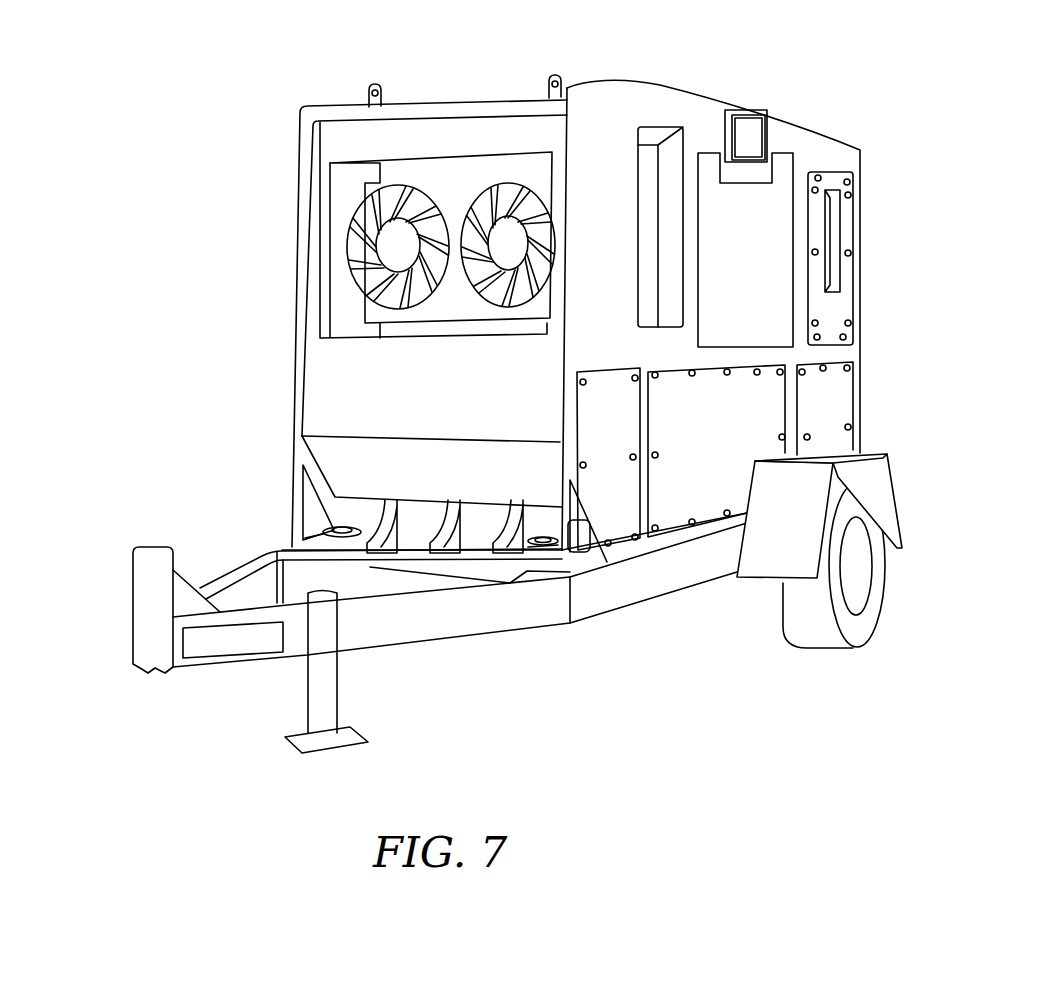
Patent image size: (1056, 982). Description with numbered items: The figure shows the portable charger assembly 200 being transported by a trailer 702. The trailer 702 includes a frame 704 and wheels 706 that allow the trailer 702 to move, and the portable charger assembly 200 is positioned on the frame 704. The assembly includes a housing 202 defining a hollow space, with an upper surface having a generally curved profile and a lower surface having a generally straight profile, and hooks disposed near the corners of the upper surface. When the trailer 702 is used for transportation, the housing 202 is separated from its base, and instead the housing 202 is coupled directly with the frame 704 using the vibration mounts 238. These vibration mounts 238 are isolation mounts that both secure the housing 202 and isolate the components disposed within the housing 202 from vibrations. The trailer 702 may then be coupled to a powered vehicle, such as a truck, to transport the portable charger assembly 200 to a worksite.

The portable charger assembly 200 is at (940, 56).
The housing 202 is at (257, 188).
The vibration mounts 238 is at (322, 523).
The trailer 702 is at (428, 672).
The frame 704 is at (597, 600).
The wheels 706 is at (850, 630).